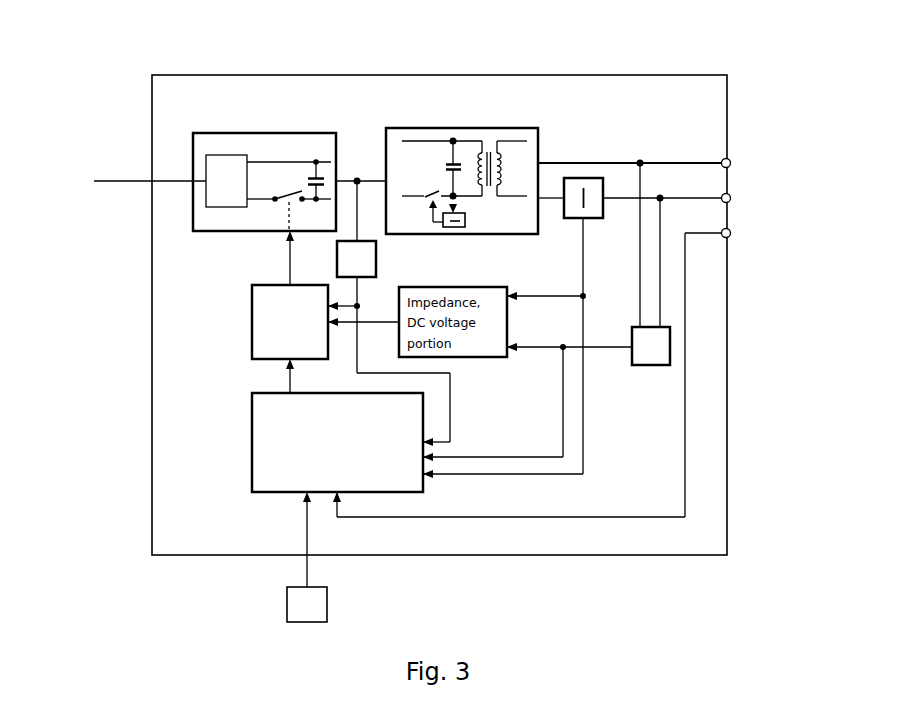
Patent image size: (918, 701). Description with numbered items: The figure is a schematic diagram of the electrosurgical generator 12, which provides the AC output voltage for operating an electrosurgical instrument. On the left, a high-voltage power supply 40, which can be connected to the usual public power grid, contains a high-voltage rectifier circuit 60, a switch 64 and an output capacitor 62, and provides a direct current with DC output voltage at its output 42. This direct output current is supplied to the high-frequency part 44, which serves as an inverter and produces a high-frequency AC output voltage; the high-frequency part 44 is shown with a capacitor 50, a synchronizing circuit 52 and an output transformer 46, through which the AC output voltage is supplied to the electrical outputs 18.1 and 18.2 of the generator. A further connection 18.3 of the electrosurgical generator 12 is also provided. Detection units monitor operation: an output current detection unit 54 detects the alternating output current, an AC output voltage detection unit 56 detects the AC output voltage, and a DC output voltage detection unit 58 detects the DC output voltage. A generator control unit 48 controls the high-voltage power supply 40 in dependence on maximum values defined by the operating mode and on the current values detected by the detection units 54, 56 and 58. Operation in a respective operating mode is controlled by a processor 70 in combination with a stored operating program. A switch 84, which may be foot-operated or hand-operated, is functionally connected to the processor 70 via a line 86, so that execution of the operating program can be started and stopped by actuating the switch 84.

The electrosurgical generator 12 is at (121, 490).
The electrical output 18.1 is at (731, 163).
The electrical output 18.2 is at (731, 198).
The connection 18.3 is at (731, 234).
The high-voltage power supply 40 is at (239, 219).
The output 42 is at (340, 177).
The high-frequency part 44 is at (444, 133).
The output transformer 46 is at (488, 130).
The generator control unit 48 is at (267, 326).
The capacitor 50 is at (446, 167).
The synchronizing circuit 52 is at (465, 221).
The output current detection unit 54 is at (590, 187).
The AC output voltage detection unit 56 is at (656, 356).
The DC output voltage detection unit 58 is at (358, 247).
The high-voltage rectifier circuit 60 is at (217, 167).
The output capacitor 62 is at (322, 180).
The switch 64 is at (285, 197).
The processor 70 is at (272, 488).
The switch 84 is at (312, 608).
The line 86 is at (307, 567).